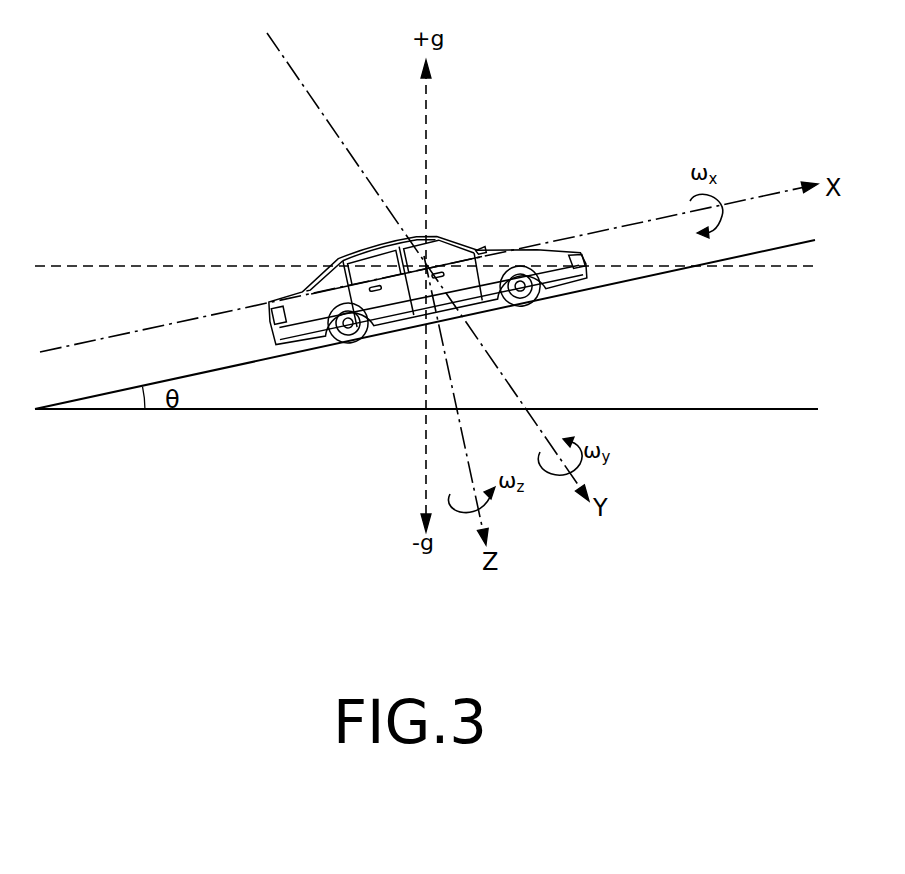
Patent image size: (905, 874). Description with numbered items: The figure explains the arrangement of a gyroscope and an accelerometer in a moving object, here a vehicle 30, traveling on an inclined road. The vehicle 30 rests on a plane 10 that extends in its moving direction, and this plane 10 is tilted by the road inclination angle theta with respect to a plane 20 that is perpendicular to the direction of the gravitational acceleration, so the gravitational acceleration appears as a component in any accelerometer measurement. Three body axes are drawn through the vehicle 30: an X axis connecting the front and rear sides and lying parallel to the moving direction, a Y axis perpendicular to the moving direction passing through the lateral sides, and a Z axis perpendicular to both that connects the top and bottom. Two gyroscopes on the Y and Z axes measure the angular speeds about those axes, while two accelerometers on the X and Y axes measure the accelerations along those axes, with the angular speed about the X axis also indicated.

The plane 10 is at (782, 249).
The plane 20 is at (783, 408).
The vehicle 30 is at (390, 245).